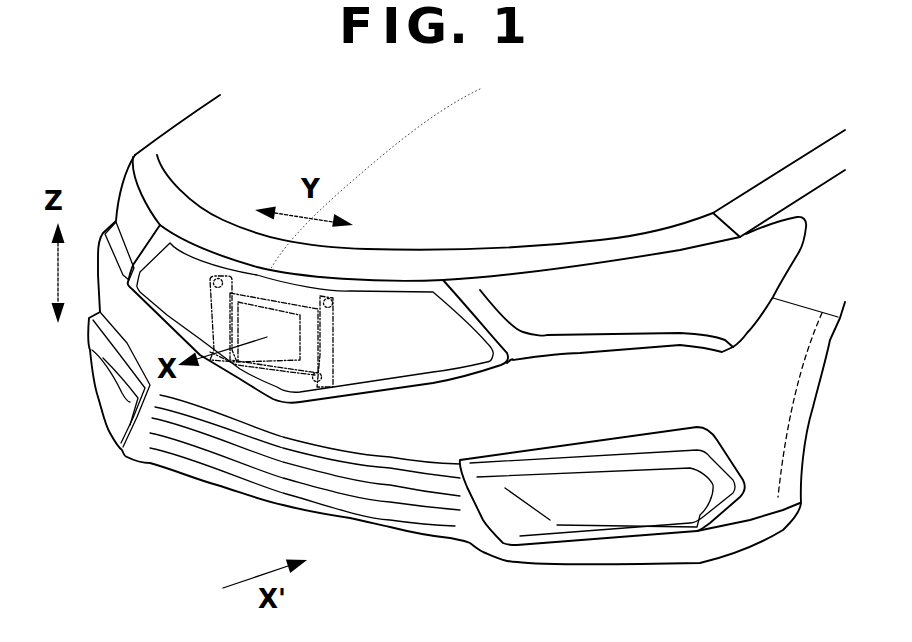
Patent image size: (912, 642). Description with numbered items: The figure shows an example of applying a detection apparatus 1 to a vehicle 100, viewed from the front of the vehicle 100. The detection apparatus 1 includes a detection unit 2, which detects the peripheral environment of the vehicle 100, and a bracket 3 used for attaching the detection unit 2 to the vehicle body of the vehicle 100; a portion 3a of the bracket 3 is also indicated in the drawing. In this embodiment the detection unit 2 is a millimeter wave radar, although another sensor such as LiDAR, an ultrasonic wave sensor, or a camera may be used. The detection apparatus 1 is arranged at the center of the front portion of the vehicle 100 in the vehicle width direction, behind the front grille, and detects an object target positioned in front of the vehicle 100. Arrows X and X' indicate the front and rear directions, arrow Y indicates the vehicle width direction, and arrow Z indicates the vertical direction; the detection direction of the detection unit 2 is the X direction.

The vehicle 100 is at (197, 108).
The detection apparatus 1 is at (343, 347).
The detection unit 2 is at (222, 300).
The bracket 3 is at (337, 307).
The mounting portion 3a is at (336, 385).